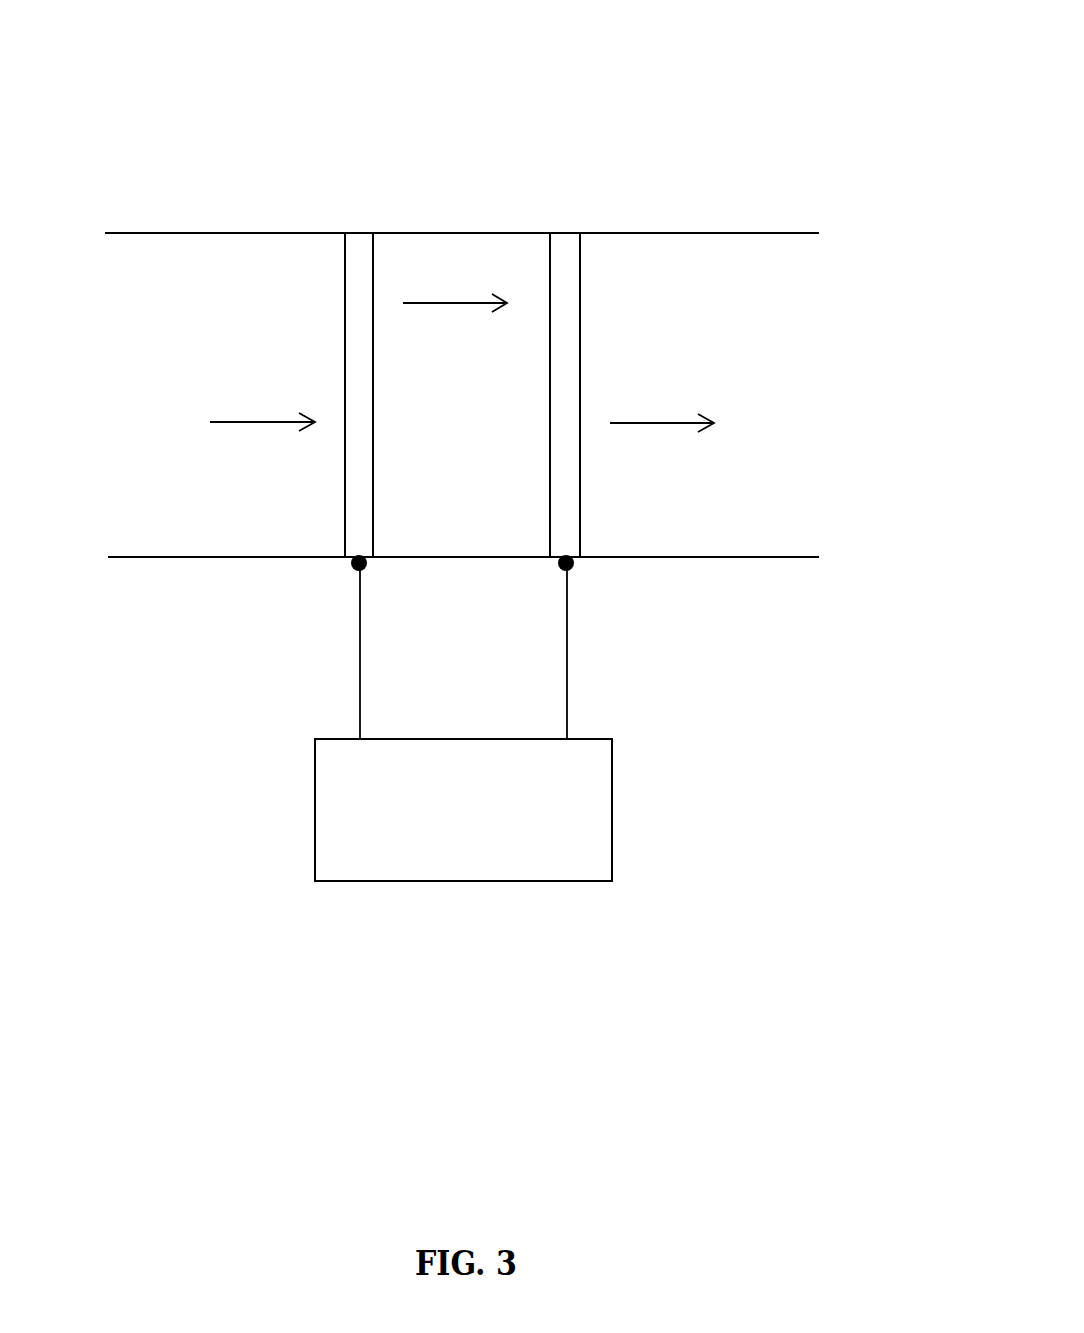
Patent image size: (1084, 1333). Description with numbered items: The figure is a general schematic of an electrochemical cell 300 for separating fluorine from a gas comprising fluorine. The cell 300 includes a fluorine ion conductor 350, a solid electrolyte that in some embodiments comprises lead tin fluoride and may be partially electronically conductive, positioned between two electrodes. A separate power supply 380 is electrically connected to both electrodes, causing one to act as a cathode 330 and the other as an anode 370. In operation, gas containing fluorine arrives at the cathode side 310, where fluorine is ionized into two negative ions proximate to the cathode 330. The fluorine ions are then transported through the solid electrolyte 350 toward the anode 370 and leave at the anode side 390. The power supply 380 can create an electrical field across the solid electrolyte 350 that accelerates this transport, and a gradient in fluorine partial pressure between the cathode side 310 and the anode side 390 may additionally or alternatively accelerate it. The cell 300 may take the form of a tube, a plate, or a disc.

The electrochemical cell 300 is at (115, 105).
The cathode side 310 is at (240, 424).
The cathode 330 is at (357, 232).
The fluorine ion conductor 350 is at (463, 232).
The anode 370 is at (568, 232).
The power supply 380 is at (612, 783).
The anode side 390 is at (689, 424).